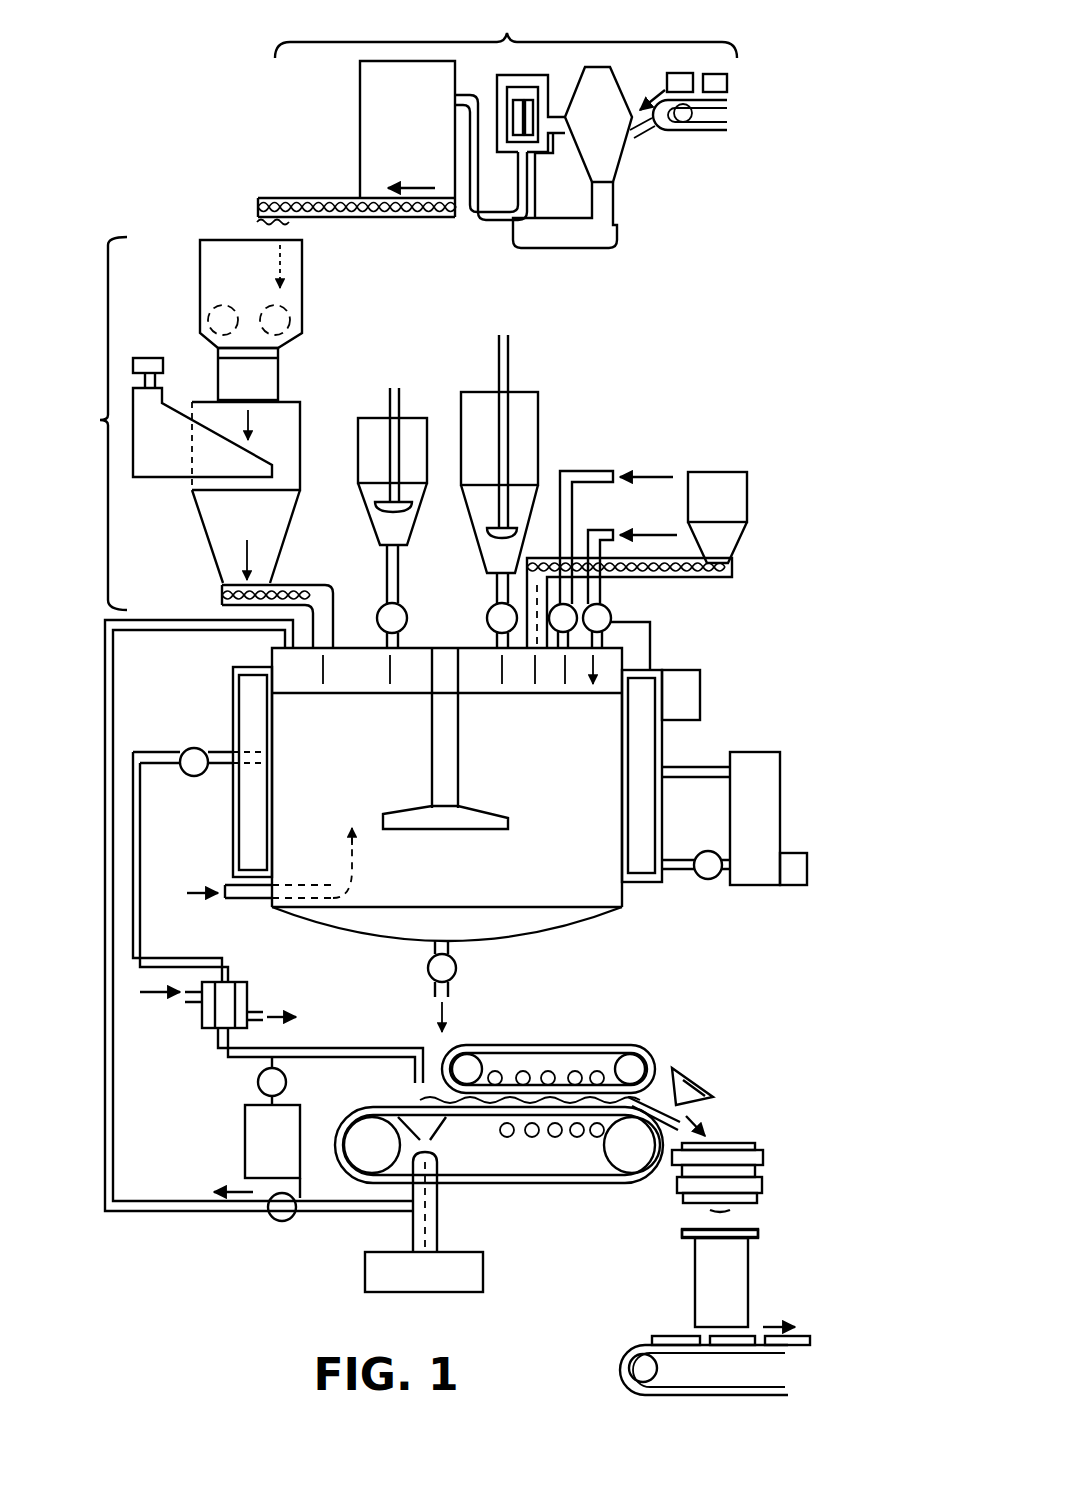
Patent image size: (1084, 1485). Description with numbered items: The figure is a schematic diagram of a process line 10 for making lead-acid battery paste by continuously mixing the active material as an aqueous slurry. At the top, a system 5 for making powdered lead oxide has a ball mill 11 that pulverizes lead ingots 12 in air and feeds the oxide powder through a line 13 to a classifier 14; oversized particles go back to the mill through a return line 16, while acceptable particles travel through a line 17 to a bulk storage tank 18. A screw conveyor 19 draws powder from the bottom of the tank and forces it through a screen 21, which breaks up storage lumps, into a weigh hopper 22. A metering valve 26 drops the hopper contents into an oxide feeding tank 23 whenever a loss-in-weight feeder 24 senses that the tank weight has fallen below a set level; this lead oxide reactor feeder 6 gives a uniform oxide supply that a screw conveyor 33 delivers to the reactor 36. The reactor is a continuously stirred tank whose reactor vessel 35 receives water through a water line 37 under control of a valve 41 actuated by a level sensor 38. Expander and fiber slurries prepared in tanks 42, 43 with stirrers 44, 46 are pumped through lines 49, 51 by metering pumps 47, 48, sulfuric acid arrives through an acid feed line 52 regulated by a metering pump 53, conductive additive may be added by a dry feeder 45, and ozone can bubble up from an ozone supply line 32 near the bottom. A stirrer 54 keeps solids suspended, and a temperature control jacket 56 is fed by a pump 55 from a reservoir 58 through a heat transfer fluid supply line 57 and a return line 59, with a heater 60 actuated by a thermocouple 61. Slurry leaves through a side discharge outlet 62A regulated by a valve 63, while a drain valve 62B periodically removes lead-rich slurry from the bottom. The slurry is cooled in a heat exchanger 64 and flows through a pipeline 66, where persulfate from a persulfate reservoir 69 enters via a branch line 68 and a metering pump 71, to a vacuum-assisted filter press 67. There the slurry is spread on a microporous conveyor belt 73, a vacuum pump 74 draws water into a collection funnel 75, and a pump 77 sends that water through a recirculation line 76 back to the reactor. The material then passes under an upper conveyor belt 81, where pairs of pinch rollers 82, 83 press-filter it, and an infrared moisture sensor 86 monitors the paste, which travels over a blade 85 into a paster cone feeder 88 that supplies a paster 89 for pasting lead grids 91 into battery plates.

The system for making powdered lead oxide 5 is at (326, 35).
The lead oxide reactor feeder 6 is at (102, 273).
The process line 10 is at (245, 148).
The ball mill 11 is at (588, 88).
The lead ingots 12 is at (713, 82).
The line 13 is at (555, 130).
The classifier 14 is at (500, 88).
The return line 16 is at (600, 228).
The line 17 is at (486, 218).
The bulk storage tank 18 is at (365, 133).
The screw conveyor 19 is at (285, 195).
The screen 21 is at (253, 223).
The weigh hopper 22 is at (212, 272).
The oxide feeding tank 23 is at (287, 423).
The loss-in-weight feeder 24 is at (150, 405).
The metering valve 26 is at (270, 358).
The ozone supply line 32 is at (237, 905).
The screw conveyor 33 is at (223, 592).
The reactor vessel 35 is at (267, 903).
The reactor 36 is at (635, 900).
The water line 37 is at (590, 550).
The level sensor 38 is at (650, 660).
The valve 41 is at (614, 606).
The tank 42 is at (358, 460).
The tank 43 is at (537, 420).
The stirrer 44 is at (395, 400).
The dry feeder 45 is at (723, 552).
The stirrer 46 is at (505, 372).
The metering pump 47 is at (382, 630).
The metering pump 48 is at (488, 610).
The line 49 is at (388, 583).
The line 51 is at (497, 637).
The acid feed line 52 is at (580, 476).
The metering pump 53 is at (555, 600).
The stirrer 54 is at (450, 652).
The pump 55 is at (722, 880).
The temperature control jacket 56 is at (255, 725).
The heat transfer fluid supply line 57 is at (680, 870).
The reservoir 58 is at (758, 763).
The return line 59 is at (700, 772).
The heater 60 is at (790, 887).
The thermocouple 61 is at (693, 687).
The discharge outlet 62A is at (255, 770).
The drain valve 62B is at (425, 972).
The valve 63 is at (196, 747).
The heat exchanger 64 is at (200, 1015).
The pipeline 66 is at (217, 1045).
The filter press 67 is at (570, 1016).
The branch line 68 is at (280, 1105).
The persulfate reservoir 69 is at (288, 1153).
The metering pump 71 is at (262, 1090).
The conveyor belt 73 is at (410, 1107).
The vacuum pump 74 is at (483, 1292).
The collection funnel 75 is at (425, 1127).
The recirculation line 76 is at (117, 1122).
The pump 77 is at (282, 1222).
The upper conveyor belt 81 is at (597, 1045).
The pinch rollers 82 is at (510, 1072).
The pinch rollers 83 is at (597, 1143).
The blade 85 is at (685, 1118).
The infrared moisture sensor 86 is at (695, 1083).
The paster cone feeder 88 is at (757, 1147).
The paster 89 is at (700, 1290).
The lead grids 91 is at (668, 1330).